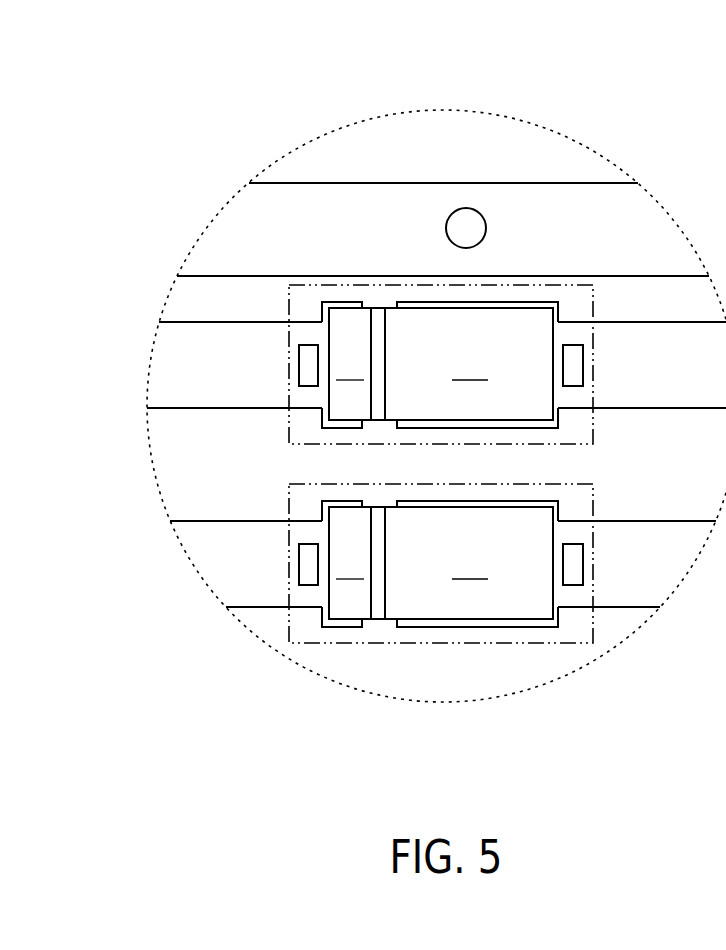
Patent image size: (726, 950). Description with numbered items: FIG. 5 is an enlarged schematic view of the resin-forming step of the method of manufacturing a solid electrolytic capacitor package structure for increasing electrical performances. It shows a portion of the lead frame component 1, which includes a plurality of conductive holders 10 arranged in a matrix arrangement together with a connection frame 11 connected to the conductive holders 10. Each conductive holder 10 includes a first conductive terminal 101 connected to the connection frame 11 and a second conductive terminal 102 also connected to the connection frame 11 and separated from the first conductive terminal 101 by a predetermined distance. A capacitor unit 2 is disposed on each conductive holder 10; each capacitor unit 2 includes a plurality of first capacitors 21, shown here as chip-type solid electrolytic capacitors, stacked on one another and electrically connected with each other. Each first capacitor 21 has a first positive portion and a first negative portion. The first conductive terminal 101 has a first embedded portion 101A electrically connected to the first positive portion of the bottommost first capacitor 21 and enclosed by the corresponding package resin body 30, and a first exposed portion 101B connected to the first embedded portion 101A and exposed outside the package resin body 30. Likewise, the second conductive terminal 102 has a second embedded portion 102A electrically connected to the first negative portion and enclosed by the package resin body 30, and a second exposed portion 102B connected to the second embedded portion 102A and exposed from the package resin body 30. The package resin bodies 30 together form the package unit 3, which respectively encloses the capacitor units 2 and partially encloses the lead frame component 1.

The lead frame component 1 is at (494, 172).
The connection frame 11 is at (443, 195).
The conductive holder 10 is at (436, 303).
The first conductive terminal 101 is at (242, 322).
The first embedded portion 101A is at (305, 335).
The first exposed portion 101B is at (215, 335).
The second conductive terminal 102 is at (637, 322).
The second embedded portion 102A is at (575, 333).
The second exposed portion 102B is at (668, 333).
The capacitor unit 2 is at (441, 406).
The first capacitor 21 is at (424, 342).
The package unit 3 is at (316, 465).
The package resin body 30 is at (287, 363).